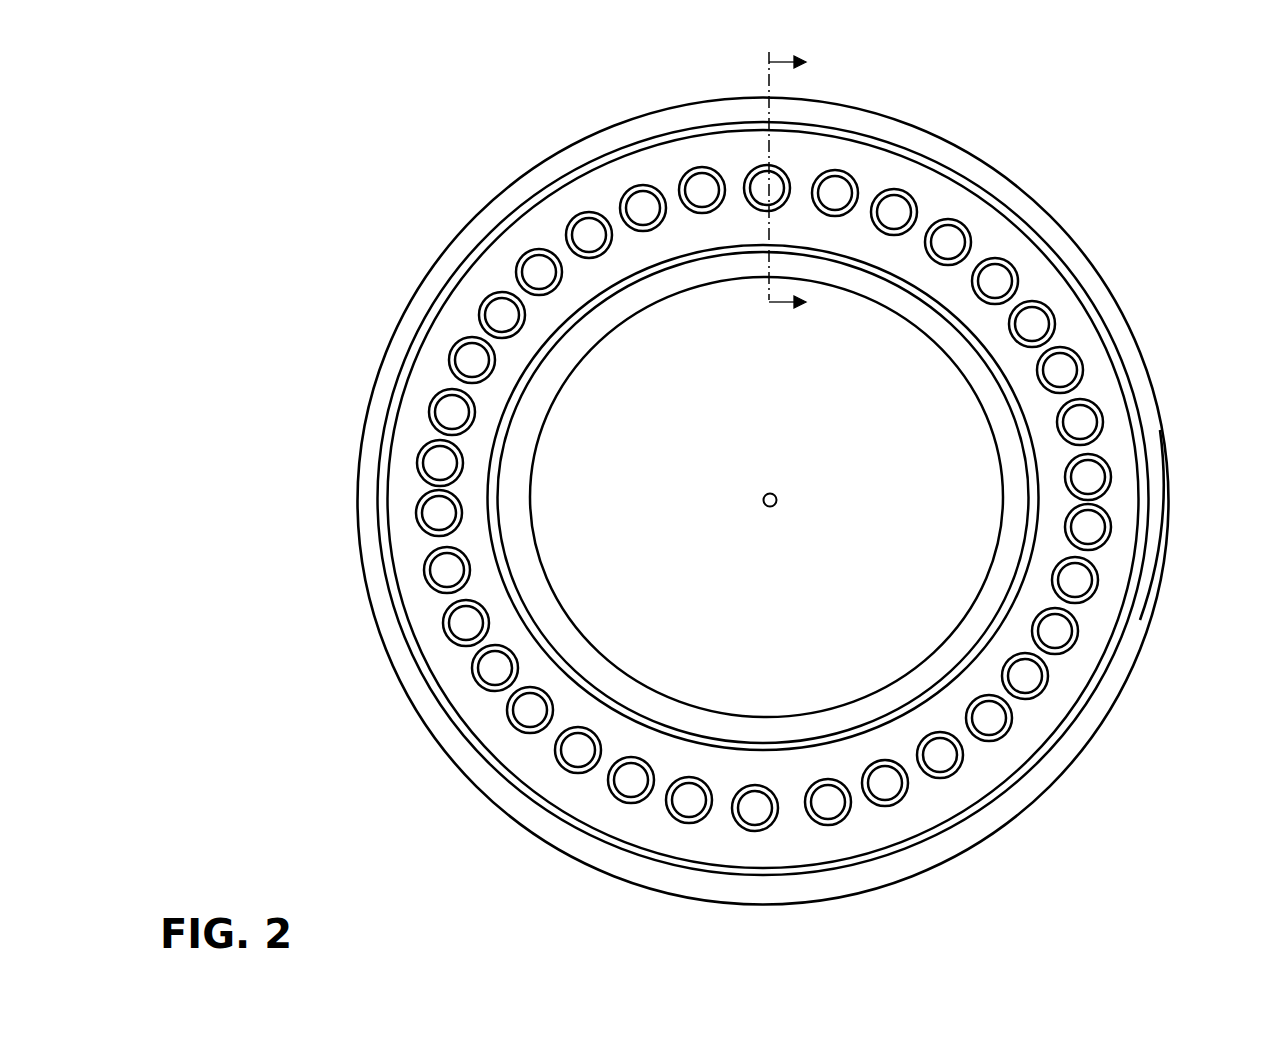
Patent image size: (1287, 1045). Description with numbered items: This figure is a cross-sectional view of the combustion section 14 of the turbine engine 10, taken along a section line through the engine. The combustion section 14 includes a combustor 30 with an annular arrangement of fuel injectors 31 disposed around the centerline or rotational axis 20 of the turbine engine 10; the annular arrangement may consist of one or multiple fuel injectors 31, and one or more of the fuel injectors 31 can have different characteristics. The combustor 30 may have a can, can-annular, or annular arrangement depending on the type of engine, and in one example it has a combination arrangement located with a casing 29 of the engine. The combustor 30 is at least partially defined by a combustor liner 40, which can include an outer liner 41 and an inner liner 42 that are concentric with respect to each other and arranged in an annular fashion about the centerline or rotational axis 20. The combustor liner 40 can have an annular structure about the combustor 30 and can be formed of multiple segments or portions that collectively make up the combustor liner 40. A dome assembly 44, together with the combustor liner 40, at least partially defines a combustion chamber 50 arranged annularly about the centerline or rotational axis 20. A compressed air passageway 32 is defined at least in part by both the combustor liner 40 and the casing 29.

The turbine engine 10 is at (900, 93).
The combustion section 14 is at (320, 105).
The centerline or rotational axis 20 is at (764, 506).
The casing 29 is at (998, 173).
The combustor 30 is at (688, 129).
The fuel injectors 31 is at (578, 209).
The compressed air passageway 32 is at (971, 359).
The combustor liner 40 is at (1136, 620).
The outer liner 41 is at (1136, 582).
The inner liner 42 is at (978, 597).
The dome assembly 44 is at (431, 375).
The combustion chamber 50 is at (508, 268).